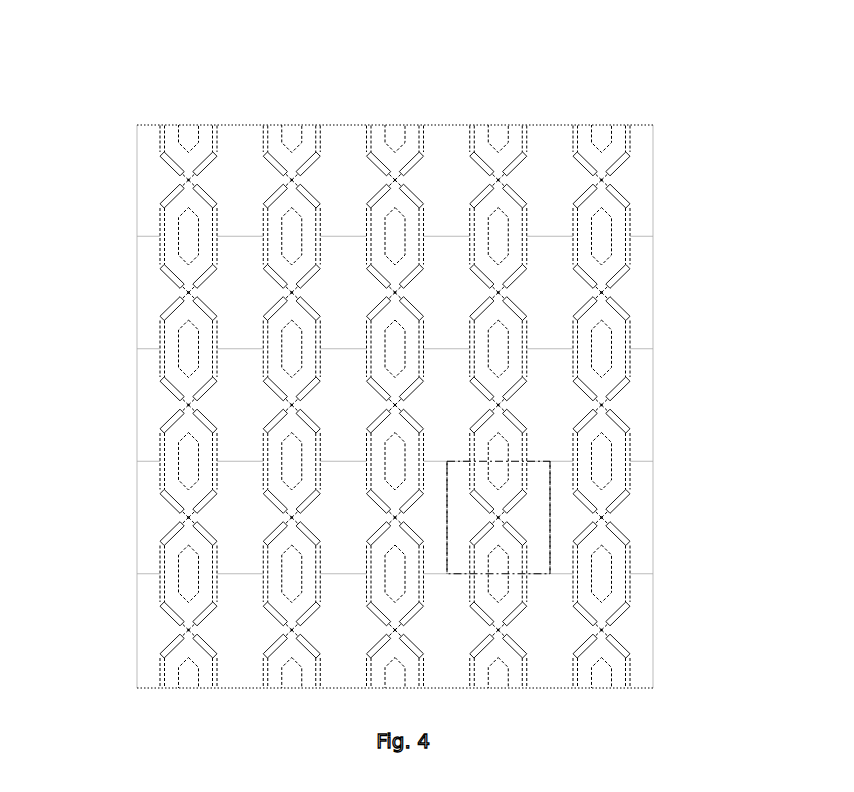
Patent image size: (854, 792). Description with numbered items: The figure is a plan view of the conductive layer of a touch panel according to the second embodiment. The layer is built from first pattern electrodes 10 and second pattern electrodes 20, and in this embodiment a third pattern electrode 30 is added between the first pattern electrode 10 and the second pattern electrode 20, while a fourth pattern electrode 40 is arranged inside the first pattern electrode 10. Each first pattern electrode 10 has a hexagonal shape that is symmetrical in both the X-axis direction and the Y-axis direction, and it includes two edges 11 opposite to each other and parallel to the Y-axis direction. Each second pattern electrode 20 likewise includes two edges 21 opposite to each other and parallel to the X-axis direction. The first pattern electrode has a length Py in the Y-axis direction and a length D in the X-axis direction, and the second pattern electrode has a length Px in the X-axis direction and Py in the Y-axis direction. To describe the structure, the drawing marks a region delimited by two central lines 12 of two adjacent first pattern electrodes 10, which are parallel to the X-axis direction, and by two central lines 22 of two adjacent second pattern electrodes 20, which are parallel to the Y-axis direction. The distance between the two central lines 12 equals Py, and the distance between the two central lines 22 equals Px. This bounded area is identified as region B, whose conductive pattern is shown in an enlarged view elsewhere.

The first pattern electrode 10 is at (403, 207).
The edges 11 is at (417, 241).
The central lines 12 is at (525, 575).
The second pattern electrode 20 is at (242, 280).
The edges 21 is at (250, 348).
The central lines 22 is at (550, 518).
The third pattern electrode 30 is at (158, 222).
The fourth pattern electrode 40 is at (497, 240).
The region B is at (550, 502).